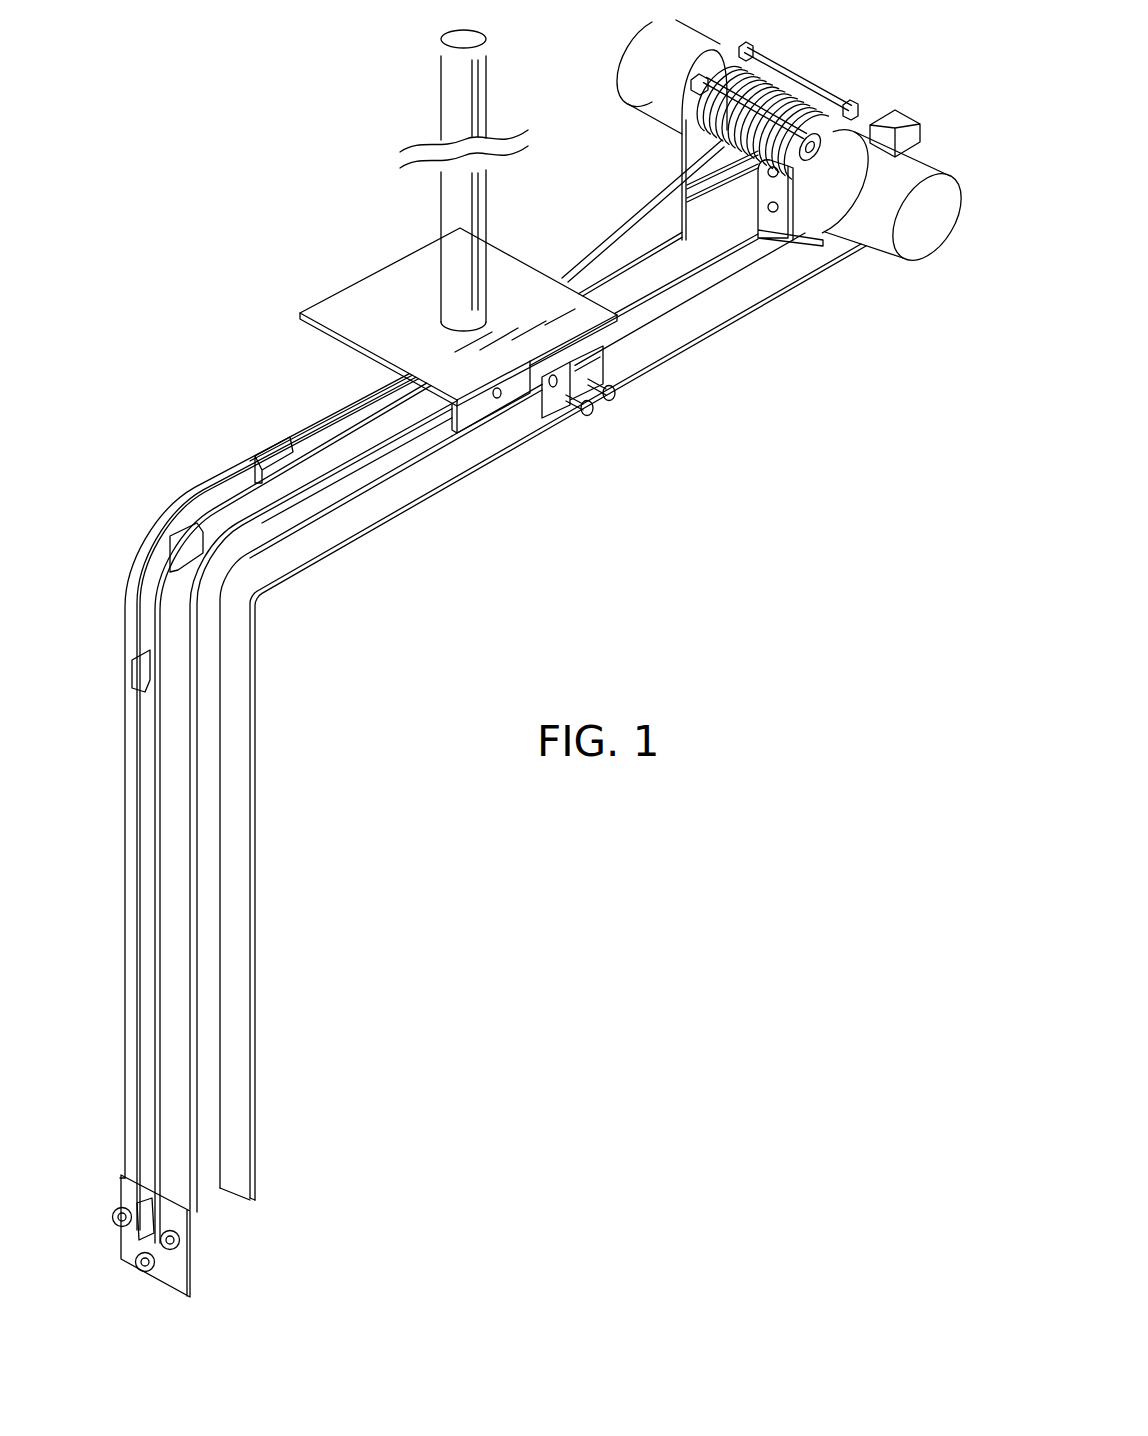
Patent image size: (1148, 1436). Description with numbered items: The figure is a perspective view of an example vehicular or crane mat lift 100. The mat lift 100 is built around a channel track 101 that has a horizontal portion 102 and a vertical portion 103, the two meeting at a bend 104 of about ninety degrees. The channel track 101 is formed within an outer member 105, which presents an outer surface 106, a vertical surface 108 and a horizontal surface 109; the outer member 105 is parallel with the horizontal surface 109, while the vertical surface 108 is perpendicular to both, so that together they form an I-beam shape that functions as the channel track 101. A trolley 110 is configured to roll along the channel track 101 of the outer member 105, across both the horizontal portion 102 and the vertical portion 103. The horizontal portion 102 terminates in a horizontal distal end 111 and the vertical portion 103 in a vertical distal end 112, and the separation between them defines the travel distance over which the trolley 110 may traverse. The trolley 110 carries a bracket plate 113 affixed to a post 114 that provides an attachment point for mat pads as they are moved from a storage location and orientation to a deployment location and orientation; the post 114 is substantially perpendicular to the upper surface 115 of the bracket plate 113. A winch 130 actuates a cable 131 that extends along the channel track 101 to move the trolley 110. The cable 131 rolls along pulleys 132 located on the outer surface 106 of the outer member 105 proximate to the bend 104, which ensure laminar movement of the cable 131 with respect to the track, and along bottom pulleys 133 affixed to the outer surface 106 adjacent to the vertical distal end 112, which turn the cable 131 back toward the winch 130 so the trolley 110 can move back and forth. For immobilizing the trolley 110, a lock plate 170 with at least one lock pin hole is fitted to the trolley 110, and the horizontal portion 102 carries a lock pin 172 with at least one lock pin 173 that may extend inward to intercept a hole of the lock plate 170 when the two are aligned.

The mat lift 100 is at (138, 153).
The channel track 101 is at (188, 486).
The horizontal portion 102 is at (509, 453).
The vertical portion 103 is at (252, 910).
The bend 104 is at (260, 598).
The outer member 105 is at (410, 453).
The outer surface 106 is at (675, 258).
The vertical surface 108 is at (340, 490).
The horizontal surface 109 is at (333, 547).
The trolley 110 is at (330, 300).
The horizontal distal end 111 is at (838, 258).
The vertical distal end 112 is at (203, 1192).
The bracket plate 113 is at (333, 340).
The post 114 is at (456, 76).
The upper surface 115 is at (405, 290).
The winch 130 is at (838, 112).
The cable 131 is at (660, 170).
The pulleys 132 is at (165, 548).
The bottom pulleys 133 is at (115, 1217).
The lock plate 170 is at (548, 395).
The lock pin 172 is at (588, 412).
The lock pin 173 is at (610, 394).